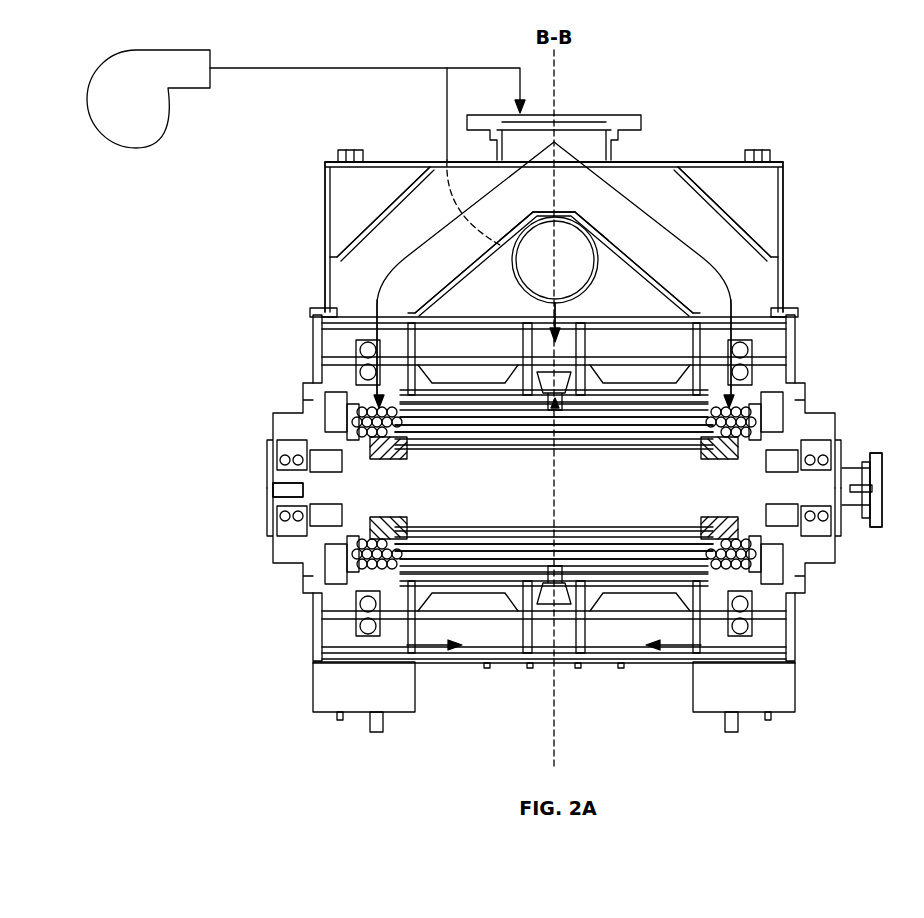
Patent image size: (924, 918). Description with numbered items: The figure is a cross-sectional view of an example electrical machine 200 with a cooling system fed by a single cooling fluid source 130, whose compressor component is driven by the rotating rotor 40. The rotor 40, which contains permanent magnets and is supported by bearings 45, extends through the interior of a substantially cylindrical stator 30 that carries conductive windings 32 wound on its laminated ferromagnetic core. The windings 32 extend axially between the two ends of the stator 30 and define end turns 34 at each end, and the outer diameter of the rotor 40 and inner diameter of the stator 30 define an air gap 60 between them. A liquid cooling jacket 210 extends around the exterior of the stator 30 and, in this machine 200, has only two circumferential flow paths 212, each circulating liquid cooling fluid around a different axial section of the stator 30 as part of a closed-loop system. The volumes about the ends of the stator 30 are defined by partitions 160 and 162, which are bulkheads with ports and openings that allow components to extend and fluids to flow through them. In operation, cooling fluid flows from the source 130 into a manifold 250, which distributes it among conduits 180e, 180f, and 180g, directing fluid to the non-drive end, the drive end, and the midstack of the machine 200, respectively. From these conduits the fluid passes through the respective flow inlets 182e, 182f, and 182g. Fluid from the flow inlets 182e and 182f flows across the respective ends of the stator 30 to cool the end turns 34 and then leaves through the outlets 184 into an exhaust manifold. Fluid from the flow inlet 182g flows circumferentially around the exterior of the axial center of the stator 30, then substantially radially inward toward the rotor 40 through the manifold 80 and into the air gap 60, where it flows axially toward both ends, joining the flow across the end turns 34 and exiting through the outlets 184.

The cooling fluid source 130 is at (157, 50).
The electrical machine 200 is at (819, 60).
The manifold 250 is at (789, 208).
The conduit 180e is at (373, 246).
The conduit 180f is at (692, 244).
The conduit 180g is at (532, 254).
The flow inlet 182e is at (334, 316).
The flow inlet 182f is at (772, 320).
The flow inlet 182g is at (612, 254).
The end turns 34 is at (357, 418).
The bearings 45 is at (327, 462).
The rotor 40 is at (443, 494).
The stator 30 is at (482, 563).
The air gap 60 is at (523, 537).
The liquid cooling jacket 210 is at (578, 575).
The conductive windings 32 is at (622, 552).
The partition 160 is at (318, 633).
The partition 162 is at (372, 636).
The outlets 184 is at (416, 667).
The circumferential flow paths 212 is at (468, 583).
The manifold 80 is at (558, 582).